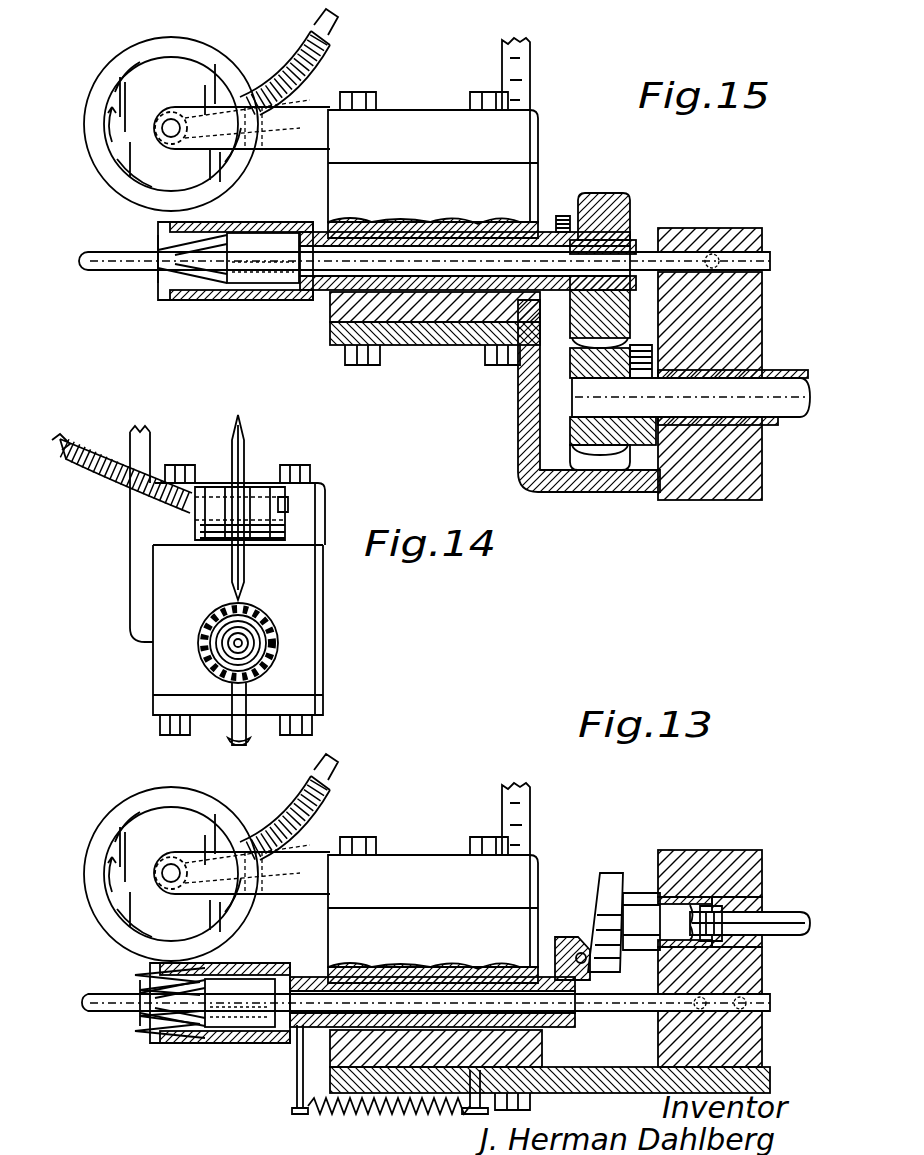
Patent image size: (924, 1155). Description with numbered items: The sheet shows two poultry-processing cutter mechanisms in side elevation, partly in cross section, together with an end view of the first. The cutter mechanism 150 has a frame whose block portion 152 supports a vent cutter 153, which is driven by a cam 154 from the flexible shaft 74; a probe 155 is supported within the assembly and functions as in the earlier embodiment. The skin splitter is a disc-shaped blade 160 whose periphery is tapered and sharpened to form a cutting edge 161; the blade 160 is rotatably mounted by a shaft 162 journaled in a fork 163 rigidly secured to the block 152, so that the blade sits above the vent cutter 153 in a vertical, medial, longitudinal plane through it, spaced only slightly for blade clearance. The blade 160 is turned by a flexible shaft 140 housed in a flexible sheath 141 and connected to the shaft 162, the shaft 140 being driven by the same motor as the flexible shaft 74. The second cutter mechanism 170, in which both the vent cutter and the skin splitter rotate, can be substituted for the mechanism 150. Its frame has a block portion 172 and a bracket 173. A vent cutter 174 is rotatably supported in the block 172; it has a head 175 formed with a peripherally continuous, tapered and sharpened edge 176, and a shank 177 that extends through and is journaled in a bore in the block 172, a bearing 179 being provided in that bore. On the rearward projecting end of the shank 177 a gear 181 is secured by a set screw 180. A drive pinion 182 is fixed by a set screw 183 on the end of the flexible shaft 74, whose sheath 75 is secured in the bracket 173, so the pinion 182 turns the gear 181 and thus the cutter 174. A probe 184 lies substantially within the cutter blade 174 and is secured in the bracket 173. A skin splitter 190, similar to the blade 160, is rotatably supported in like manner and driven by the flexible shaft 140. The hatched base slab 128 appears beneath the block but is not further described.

In FIG. 15, the skin splitter 190 is at (135, 67).
In FIG. 15, the flexible shaft 140 is at (332, 24).
In FIG. 14, the flexible shaft 140 is at (58, 441).
In FIG. 13, the flexible shaft 140 is at (329, 774).
In FIG. 14, the flexible sheath 141 is at (112, 490).
In FIG. 13, the flexible sheath 141 is at (304, 798).
In FIG. 15, the bearing 179 is at (485, 242).
In FIG. 15, the set screw 180 is at (563, 216).
In FIG. 15, the gear 181 is at (632, 213).
In FIG. 15, the probe 184 is at (262, 254).
In FIG. 15, the sharpened edge 176 is at (170, 298).
In FIG. 15, the head 175 is at (207, 300).
In FIG. 15, the vent cutter 174 is at (252, 309).
In FIG. 15, the block portion 172 is at (318, 315).
In FIG. 15, the base slab 128 is at (400, 310).
In FIG. 15, the cutter mechanism 170 is at (443, 360).
In FIG. 15, the shank 177 is at (468, 338).
In FIG. 15, the bracket 173 is at (750, 302).
In FIG. 15, the set screw 183 is at (653, 358).
In FIG. 15, the sheath 75 is at (763, 398).
In FIG. 15, the drive pinion 182 is at (595, 457).
In FIG. 15, the flexible shaft 74 is at (736, 418).
In FIG. 13, the flexible shaft 74 is at (803, 910).
In FIG. 14, the disc-shaped blade 160 is at (245, 456).
In FIG. 13, the disc-shaped blade 160 is at (132, 809).
In FIG. 14, the shaft 162 is at (290, 504).
In FIG. 13, the shaft 162 is at (185, 865).
In FIG. 14, the fork 163 is at (190, 527).
In FIG. 13, the fork 163 is at (333, 852).
In FIG. 14, the block portion 152 is at (307, 603).
In FIG. 13, the block portion 152 is at (330, 927).
In FIG. 14, the probe 155 is at (261, 645).
In FIG. 13, the probe 155 is at (267, 1012).
In FIG. 14, the cutter mechanism 150 is at (288, 668).
In FIG. 13, the cutter mechanism 150 is at (247, 1053).
In FIG. 13, the cutting edge 161 is at (90, 907).
In FIG. 13, the vent cutter 153 is at (208, 1030).
In FIG. 13, the cam 154 is at (608, 876).